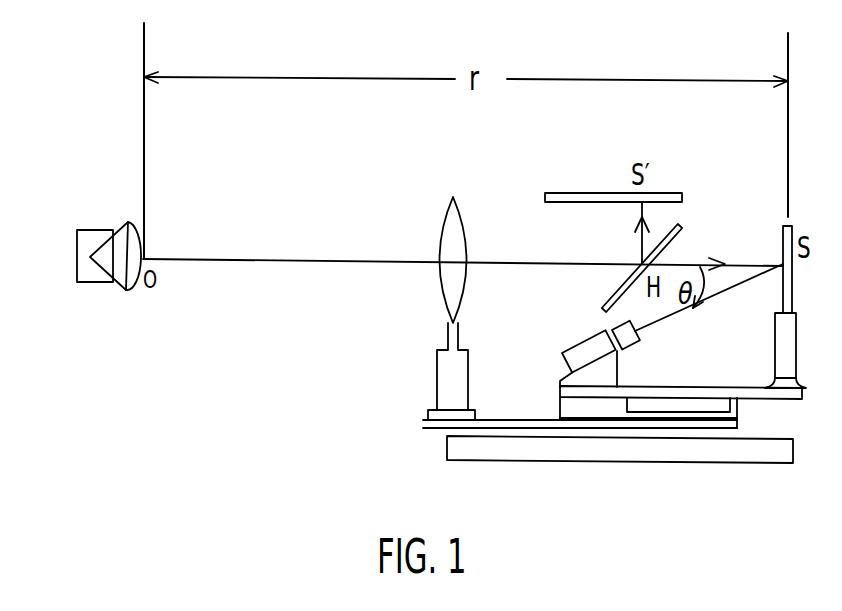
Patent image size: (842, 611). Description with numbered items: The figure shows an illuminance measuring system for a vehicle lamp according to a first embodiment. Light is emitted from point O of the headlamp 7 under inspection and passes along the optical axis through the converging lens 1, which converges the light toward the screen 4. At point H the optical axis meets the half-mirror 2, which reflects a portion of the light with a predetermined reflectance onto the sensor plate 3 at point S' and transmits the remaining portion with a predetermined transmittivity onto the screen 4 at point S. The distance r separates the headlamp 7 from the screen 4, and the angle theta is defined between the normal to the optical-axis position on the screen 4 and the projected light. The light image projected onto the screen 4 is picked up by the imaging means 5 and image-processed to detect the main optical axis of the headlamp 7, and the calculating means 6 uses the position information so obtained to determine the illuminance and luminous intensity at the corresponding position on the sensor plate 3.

The converging lens 1 is at (448, 303).
The half-mirror 2 is at (682, 227).
The sensor plate 3 is at (670, 192).
The screen 4 is at (792, 293).
The imaging means 5 is at (567, 363).
The calculating means 6 is at (650, 460).
The headlamp 7 is at (122, 290).